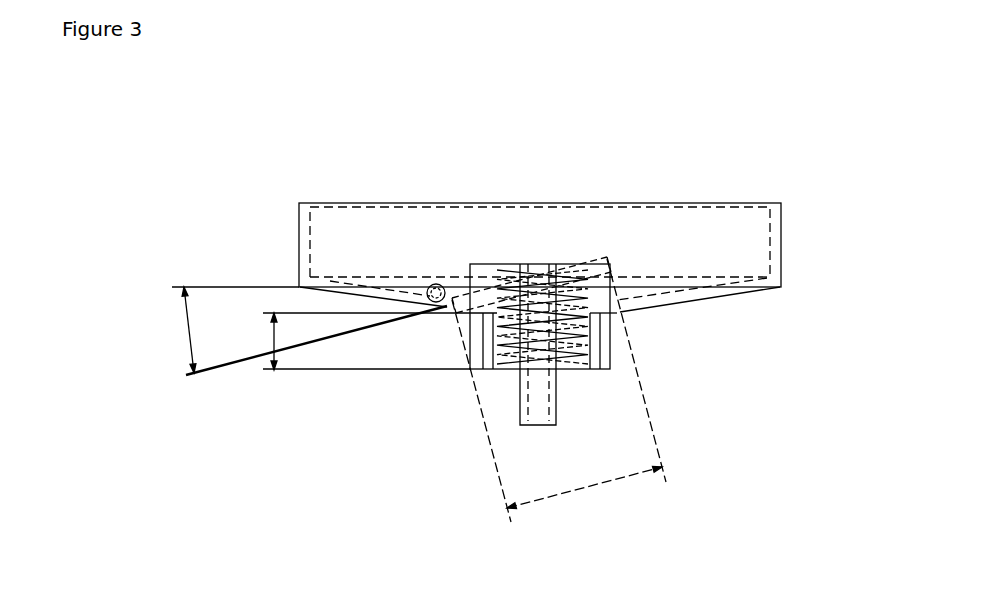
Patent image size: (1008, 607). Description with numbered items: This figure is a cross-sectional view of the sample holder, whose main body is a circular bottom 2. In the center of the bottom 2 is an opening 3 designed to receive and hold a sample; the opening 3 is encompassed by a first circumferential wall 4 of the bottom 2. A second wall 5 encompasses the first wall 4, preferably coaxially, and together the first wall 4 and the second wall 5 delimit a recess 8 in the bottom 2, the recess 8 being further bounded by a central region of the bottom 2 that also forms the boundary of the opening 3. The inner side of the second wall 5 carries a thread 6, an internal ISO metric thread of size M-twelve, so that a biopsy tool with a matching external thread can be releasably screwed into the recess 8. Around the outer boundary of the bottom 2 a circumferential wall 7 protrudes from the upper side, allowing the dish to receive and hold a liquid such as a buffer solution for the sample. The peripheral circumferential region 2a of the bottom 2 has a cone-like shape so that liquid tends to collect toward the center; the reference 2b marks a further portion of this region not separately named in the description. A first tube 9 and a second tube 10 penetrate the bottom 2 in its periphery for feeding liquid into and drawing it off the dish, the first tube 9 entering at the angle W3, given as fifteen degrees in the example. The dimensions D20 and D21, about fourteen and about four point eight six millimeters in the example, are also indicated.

The bottom 2 is at (678, 286).
The circumferential region 2a is at (650, 306).
The second clamping flange 2b is at (603, 299).
The opening 3 is at (543, 264).
The first circumferential wall 4 is at (520, 408).
The second wall 5 is at (603, 333).
The thread 6 is at (600, 353).
The circumferential wall 7 is at (781, 247).
The recess 8 is at (470, 342).
The first tube 9 is at (472, 292).
The second tube 10 is at (437, 284).
The angle W3 is at (183, 325).
The dimension D21 is at (273, 333).
The dimension D20 is at (590, 485).